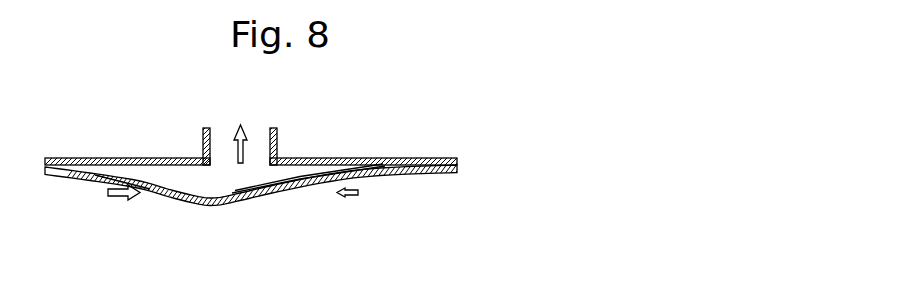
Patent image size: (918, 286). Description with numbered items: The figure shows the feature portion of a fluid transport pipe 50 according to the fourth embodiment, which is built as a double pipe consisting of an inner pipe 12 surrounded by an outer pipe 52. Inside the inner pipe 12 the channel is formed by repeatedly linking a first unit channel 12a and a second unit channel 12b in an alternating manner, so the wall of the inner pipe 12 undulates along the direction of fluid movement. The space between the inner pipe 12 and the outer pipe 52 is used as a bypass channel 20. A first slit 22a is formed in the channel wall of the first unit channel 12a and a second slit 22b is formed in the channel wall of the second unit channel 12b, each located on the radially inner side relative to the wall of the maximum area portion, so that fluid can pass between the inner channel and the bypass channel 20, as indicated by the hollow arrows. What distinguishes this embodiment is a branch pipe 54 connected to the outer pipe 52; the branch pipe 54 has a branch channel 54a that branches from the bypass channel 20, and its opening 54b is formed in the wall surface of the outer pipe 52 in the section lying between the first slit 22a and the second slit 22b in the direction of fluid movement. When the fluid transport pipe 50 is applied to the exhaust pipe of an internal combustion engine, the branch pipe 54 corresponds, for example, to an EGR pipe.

The fluid transport pipe 50 is at (472, 140).
The outer pipe 52 is at (402, 158).
The branch pipe 54 is at (277, 132).
The branch channel 54a is at (220, 143).
The opening 54b is at (227, 165).
The bypass channel 20 is at (297, 180).
The inner pipe 12 is at (443, 173).
The first unit channel 12a is at (122, 213).
The second unit channel 12b is at (357, 220).
The first slit 22a is at (148, 187).
The second slit 22b is at (310, 186).